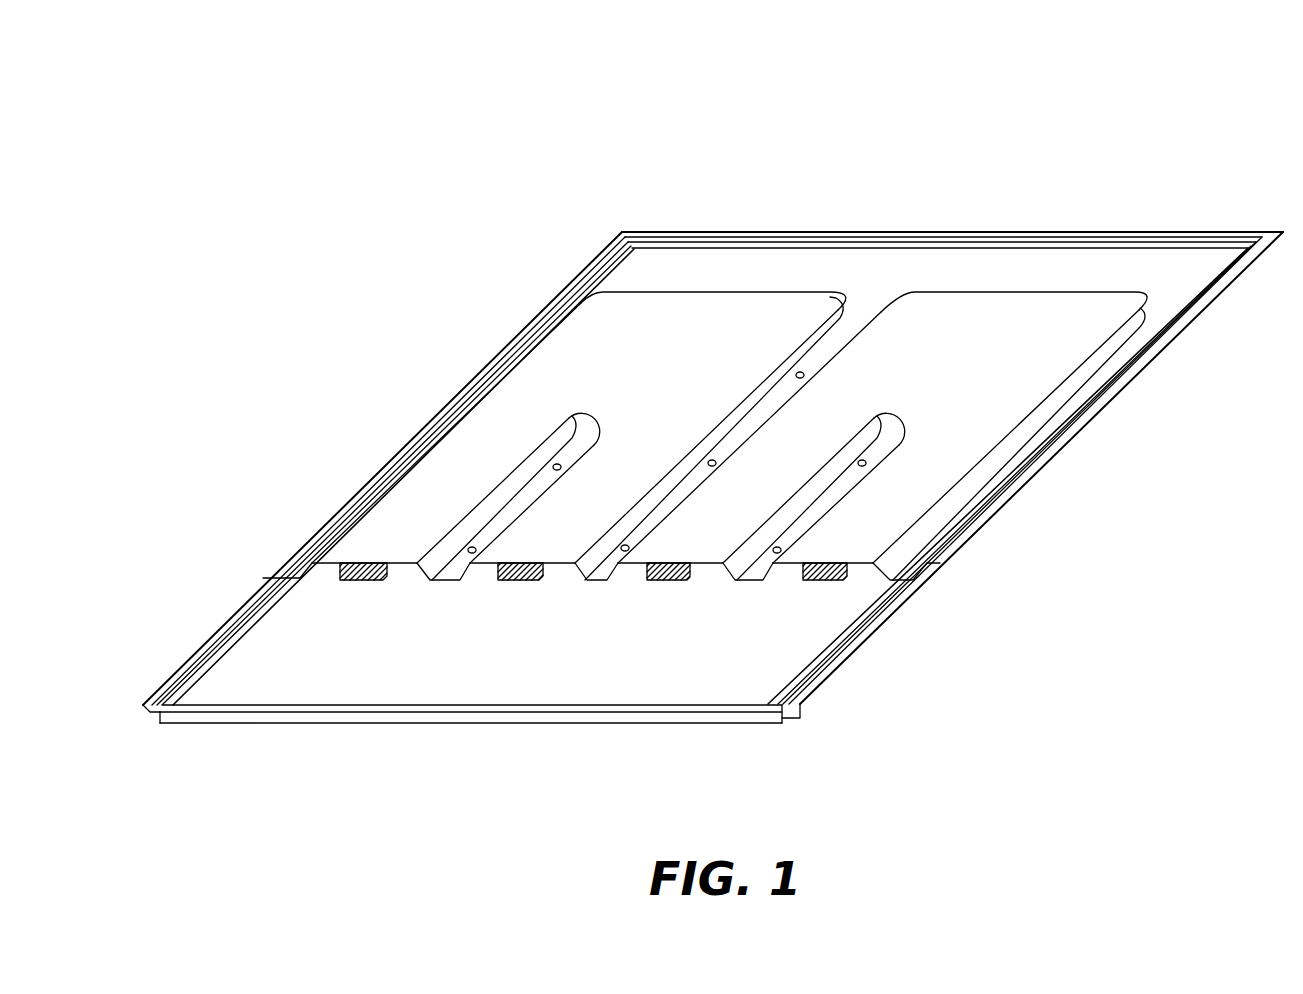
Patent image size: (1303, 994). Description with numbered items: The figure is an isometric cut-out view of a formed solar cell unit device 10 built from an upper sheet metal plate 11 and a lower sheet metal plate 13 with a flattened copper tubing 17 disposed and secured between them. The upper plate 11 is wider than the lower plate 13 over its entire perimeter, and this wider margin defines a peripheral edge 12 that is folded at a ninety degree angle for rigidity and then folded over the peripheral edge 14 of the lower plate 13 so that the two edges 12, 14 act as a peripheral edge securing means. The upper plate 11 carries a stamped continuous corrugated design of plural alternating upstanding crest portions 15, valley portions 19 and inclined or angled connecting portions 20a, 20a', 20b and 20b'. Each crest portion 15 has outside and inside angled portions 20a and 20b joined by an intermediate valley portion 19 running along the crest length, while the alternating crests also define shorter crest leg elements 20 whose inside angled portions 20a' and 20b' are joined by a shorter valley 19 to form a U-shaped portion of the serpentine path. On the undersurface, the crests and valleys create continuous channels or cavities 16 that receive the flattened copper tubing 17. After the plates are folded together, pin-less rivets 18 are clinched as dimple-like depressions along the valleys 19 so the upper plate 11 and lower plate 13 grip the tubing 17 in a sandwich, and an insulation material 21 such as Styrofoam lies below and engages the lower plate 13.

The solar cell unit device 10 is at (940, 88).
The upper sheet metal plate 11 is at (718, 276).
The peripheral edge 12 is at (940, 232).
The lower sheet metal plate 13 is at (466, 679).
The peripheral edge 14 is at (210, 625).
The upstanding crest portion 15 is at (680, 322).
The channel or cavity 16 is at (465, 577).
The flattened copper tubing 17 is at (817, 582).
The pin-less rivet 18 is at (805, 375).
The valley portion 19 is at (485, 540).
The crest leg element 20 is at (385, 532).
The outside inclined or angled portion 20a is at (650, 397).
The inside inclined or angled portion 20b is at (923, 438).
The inside inclined or angled portion 20a' is at (757, 434).
The inside inclined or angled portion 20b' is at (656, 482).
The insulation material 21 is at (775, 723).